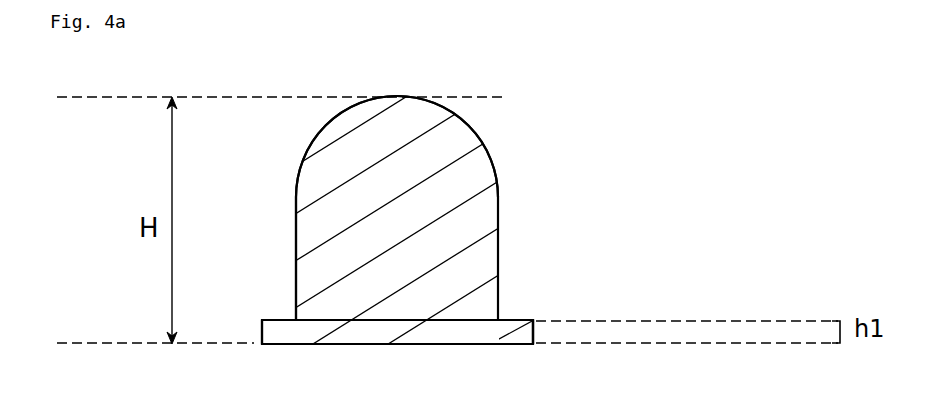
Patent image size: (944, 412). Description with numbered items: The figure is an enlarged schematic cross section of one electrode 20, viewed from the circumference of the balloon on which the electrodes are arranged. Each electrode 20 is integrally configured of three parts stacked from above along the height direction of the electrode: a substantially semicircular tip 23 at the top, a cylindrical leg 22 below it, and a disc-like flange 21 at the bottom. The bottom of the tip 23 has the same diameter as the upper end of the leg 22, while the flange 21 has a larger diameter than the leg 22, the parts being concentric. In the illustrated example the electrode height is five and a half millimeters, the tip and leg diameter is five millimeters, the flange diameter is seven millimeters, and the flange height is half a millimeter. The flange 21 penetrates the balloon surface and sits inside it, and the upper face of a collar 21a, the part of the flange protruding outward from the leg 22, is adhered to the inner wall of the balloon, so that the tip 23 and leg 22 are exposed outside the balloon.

The electrode 20 is at (526, 229).
The flange 21 is at (492, 335).
The collar 21a is at (515, 318).
The leg 22 is at (295, 232).
The tip 23 is at (402, 97).